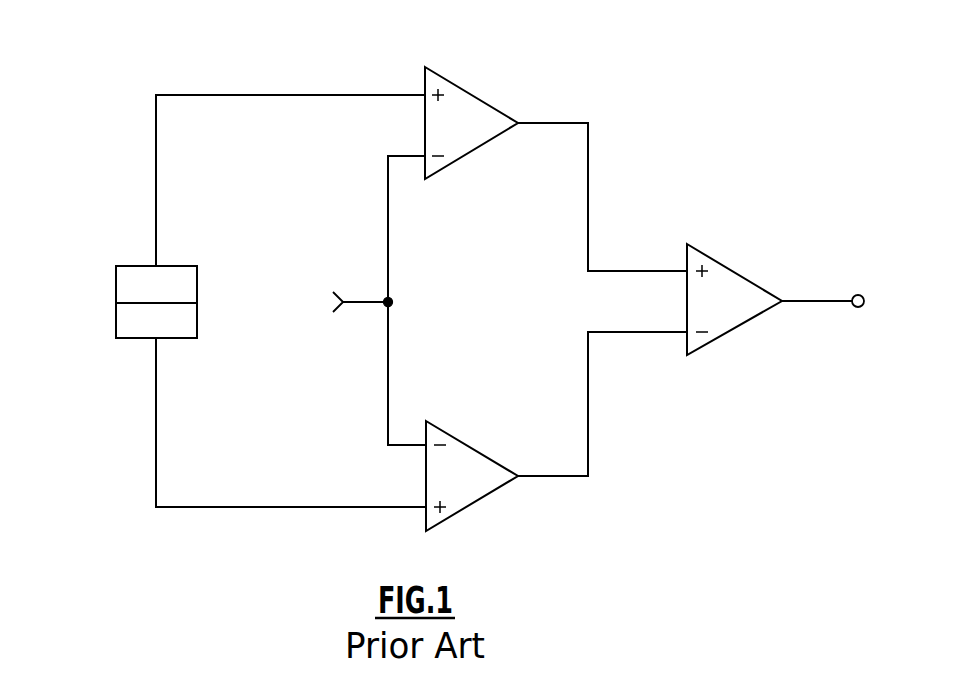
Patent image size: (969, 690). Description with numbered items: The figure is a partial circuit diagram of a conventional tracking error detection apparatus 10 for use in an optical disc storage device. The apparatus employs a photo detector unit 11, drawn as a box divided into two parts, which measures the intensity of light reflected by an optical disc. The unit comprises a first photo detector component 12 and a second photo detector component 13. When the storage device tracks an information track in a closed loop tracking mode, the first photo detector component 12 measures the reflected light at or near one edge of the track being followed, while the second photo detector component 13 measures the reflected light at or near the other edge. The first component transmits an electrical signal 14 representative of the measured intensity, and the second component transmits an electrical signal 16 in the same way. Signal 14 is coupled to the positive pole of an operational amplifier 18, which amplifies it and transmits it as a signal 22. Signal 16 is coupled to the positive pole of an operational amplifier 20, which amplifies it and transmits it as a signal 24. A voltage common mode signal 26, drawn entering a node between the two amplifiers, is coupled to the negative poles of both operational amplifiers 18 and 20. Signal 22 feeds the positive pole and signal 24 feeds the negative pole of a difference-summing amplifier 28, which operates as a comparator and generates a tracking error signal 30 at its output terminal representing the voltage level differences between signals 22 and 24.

The tracking error detection apparatus 10 is at (388, 52).
The photo detector unit 11 is at (122, 309).
The first photo detector component 12 is at (141, 266).
The second photo detector component 13 is at (140, 340).
The signal 14 is at (233, 93).
The signal 16 is at (237, 509).
The operational amplifier 18 is at (462, 86).
The operational amplifier 20 is at (470, 507).
The signal 22 is at (545, 121).
The signal 24 is at (582, 478).
The voltage common mode signal 26 is at (371, 300).
The difference-summing amplifier 28 is at (727, 263).
The tracking error signal 30 is at (808, 300).